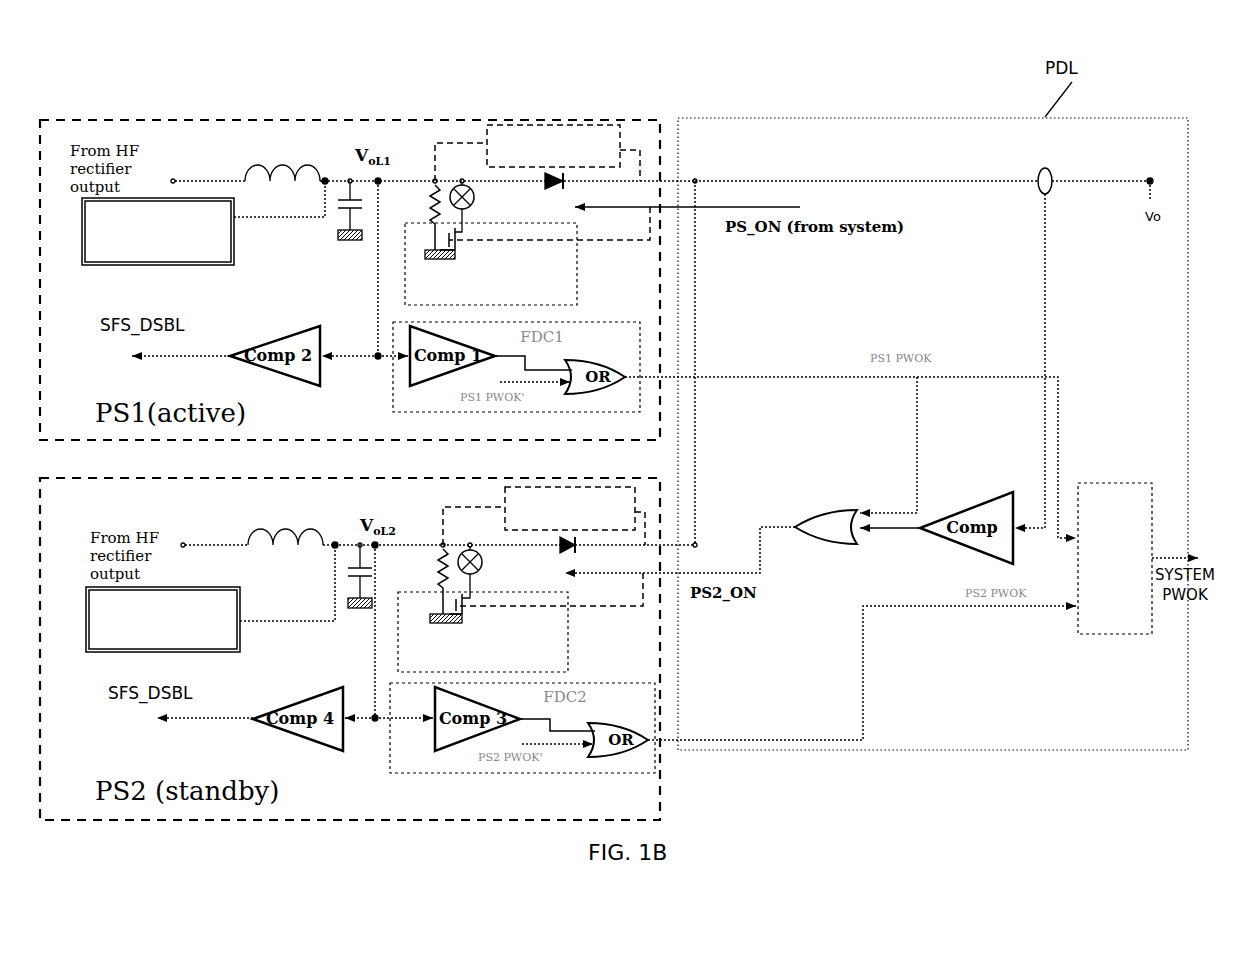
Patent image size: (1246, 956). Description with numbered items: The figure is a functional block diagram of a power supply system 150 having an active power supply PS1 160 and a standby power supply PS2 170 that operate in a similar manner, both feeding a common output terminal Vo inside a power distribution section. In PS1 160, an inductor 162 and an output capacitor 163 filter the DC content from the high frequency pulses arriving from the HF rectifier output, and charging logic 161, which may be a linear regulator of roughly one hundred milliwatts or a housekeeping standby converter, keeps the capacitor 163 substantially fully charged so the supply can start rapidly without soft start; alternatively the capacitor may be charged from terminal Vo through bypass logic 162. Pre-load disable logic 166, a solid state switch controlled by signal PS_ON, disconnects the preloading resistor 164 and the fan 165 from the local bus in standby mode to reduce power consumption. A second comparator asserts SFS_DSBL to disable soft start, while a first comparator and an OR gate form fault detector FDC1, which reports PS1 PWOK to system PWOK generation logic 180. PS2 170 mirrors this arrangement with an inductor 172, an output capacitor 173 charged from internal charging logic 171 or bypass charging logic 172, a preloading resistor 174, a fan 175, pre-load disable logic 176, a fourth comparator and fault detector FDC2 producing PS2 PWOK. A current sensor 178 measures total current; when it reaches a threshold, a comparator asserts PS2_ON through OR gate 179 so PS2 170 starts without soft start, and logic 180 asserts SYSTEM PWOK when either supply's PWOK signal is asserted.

The power supply system 150 is at (1186, 72).
The power supply PS1 160 is at (252, 118).
The charging logic 161 is at (158, 231).
The inductor / bypass logic 162 is at (270, 167).
The output capacitor 163 is at (338, 212).
The preloading resistor 164 is at (432, 208).
The fan 165 is at (476, 198).
The pre-load disable logic 166 is at (491, 264).
The power supply PS2 170 is at (253, 820).
The internal charging logic 171 is at (163, 619).
The inductor / charging logic 172 is at (276, 531).
The output capacitor 173 is at (348, 574).
The preloading resistor 174 is at (443, 570).
The fan 175 is at (482, 560).
The pre-load disable logic 176 is at (483, 632).
The current sensor 178 is at (1050, 168).
The OR gate 179 is at (840, 508).
The system PWOK generation logic 180 is at (1115, 558).